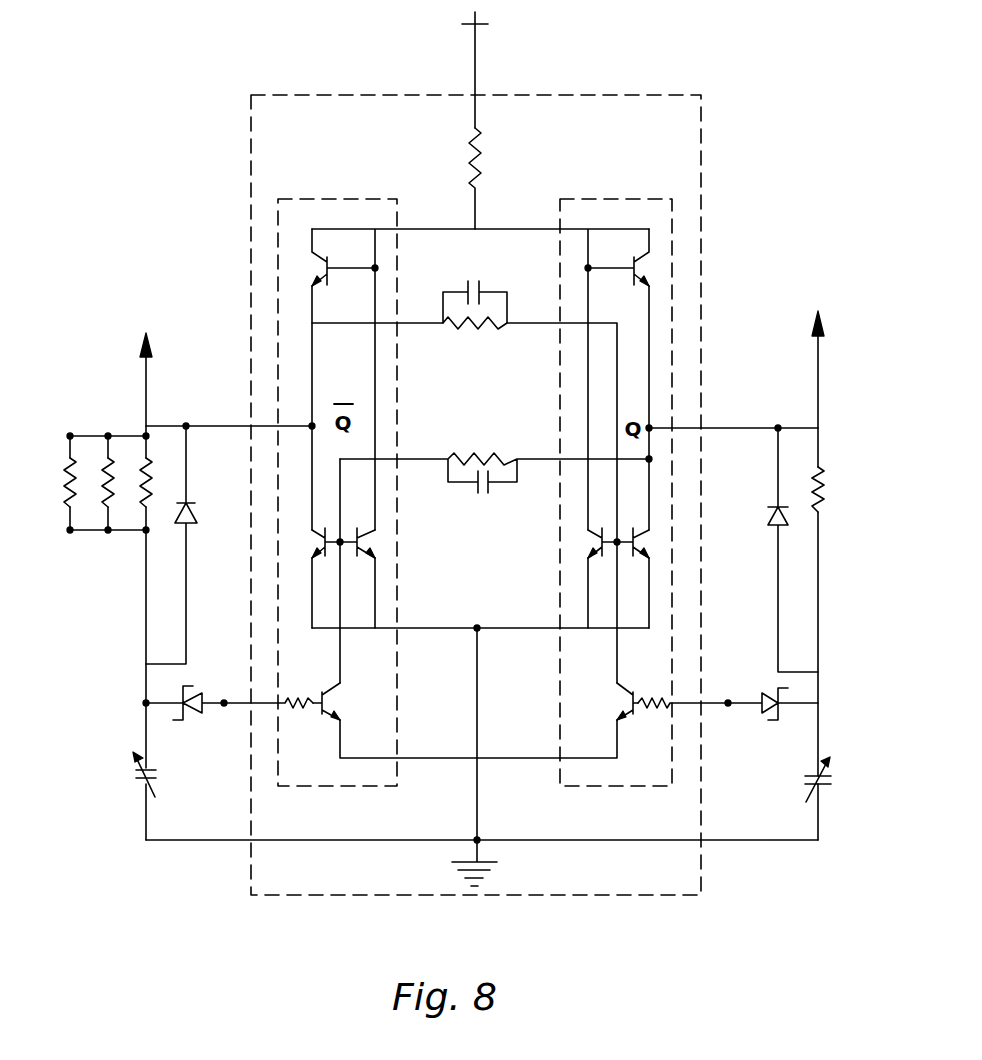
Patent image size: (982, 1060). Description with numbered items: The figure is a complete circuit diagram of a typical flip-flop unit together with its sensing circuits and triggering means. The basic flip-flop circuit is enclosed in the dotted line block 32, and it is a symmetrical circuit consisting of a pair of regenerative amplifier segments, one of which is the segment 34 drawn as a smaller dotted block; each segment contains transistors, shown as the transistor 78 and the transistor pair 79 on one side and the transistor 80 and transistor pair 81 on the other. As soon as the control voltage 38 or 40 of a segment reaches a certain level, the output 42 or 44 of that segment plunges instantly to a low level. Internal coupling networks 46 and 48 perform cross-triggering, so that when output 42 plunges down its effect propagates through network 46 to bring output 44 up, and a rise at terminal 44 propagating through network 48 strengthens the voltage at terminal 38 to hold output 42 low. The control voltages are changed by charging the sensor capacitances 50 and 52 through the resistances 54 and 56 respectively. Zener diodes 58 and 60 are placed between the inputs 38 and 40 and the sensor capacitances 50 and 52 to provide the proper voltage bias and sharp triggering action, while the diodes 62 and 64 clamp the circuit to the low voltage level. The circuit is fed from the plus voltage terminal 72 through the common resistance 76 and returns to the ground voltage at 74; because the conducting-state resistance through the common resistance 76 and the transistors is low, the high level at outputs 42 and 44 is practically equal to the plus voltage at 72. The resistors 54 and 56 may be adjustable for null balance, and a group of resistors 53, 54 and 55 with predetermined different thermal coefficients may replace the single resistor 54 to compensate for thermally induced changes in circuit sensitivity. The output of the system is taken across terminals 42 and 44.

The dotted line block 32 is at (706, 172).
The regenerative amplifier segment 34 is at (337, 197).
The control voltage 38 is at (224, 700).
The control voltage 40 is at (729, 700).
The output 42 is at (190, 421).
The output 44 is at (781, 422).
The internal coupling network 46 is at (494, 287).
The internal coupling network 48 is at (500, 490).
The sensor capacitance 50 is at (134, 777).
The sensor capacitance 52 is at (826, 790).
The resistor 53 is at (67, 463).
The resistance 54 is at (148, 462).
The resistor 55 is at (104, 502).
The resistance 56 is at (825, 487).
The Zener diode 58 is at (196, 719).
The Zener diode 60 is at (768, 715).
The diode 62 is at (195, 516).
The diode 64 is at (770, 512).
The plus voltage supply terminal 72 is at (488, 42).
The ground voltage 74 is at (480, 838).
The common resistance 76 is at (483, 150).
The transistor 78 is at (320, 253).
The transistor pair 79 is at (319, 530).
The transistor 80 is at (637, 262).
The transistor pair 81 is at (641, 530).